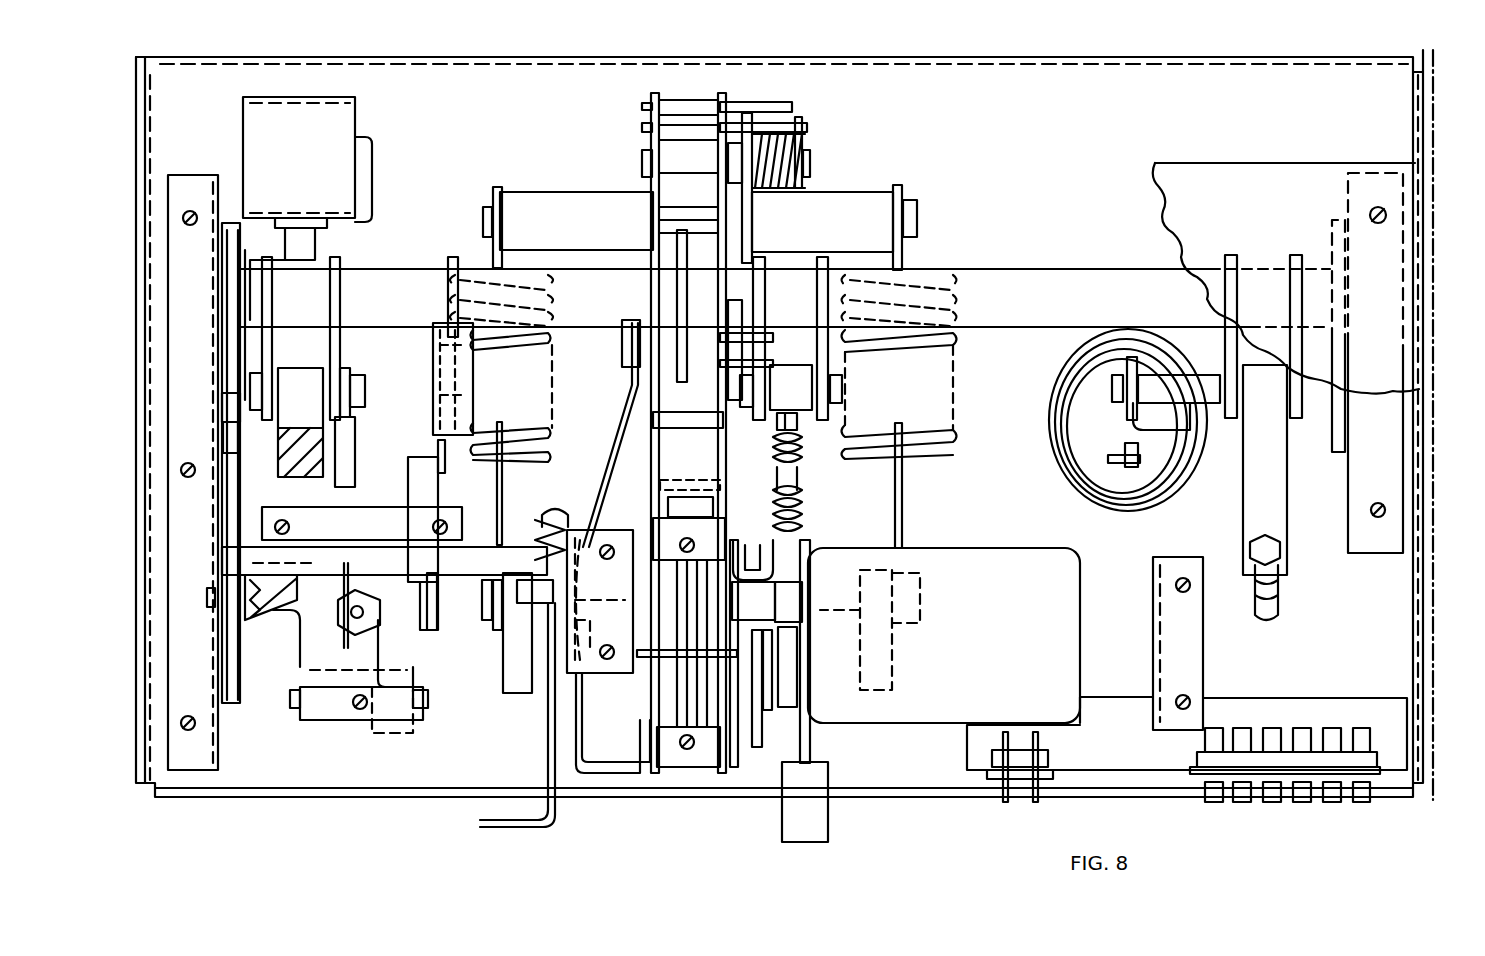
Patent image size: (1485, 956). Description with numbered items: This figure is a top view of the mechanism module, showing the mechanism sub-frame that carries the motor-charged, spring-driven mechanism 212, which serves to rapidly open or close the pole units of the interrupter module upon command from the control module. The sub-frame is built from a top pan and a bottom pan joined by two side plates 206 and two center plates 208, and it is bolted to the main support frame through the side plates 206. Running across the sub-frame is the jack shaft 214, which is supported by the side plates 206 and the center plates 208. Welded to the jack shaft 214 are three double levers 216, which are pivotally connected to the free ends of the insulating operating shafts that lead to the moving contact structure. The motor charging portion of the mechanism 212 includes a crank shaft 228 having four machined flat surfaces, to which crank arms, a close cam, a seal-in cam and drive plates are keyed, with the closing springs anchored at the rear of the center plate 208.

The side plates 206 is at (136, 245).
The center plates 208 is at (730, 95).
The motor-charged, spring-driven mechanism 212 is at (1029, 185).
The jack shaft 214 is at (1052, 272).
The double levers 216 is at (270, 313).
The crank shaft 228 is at (523, 545).